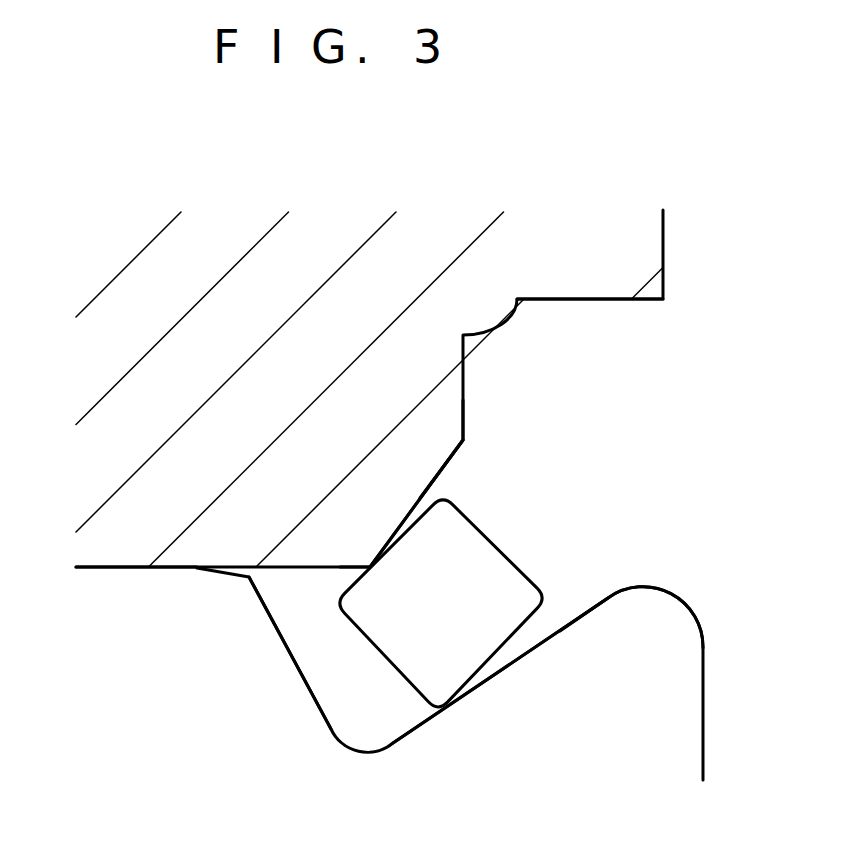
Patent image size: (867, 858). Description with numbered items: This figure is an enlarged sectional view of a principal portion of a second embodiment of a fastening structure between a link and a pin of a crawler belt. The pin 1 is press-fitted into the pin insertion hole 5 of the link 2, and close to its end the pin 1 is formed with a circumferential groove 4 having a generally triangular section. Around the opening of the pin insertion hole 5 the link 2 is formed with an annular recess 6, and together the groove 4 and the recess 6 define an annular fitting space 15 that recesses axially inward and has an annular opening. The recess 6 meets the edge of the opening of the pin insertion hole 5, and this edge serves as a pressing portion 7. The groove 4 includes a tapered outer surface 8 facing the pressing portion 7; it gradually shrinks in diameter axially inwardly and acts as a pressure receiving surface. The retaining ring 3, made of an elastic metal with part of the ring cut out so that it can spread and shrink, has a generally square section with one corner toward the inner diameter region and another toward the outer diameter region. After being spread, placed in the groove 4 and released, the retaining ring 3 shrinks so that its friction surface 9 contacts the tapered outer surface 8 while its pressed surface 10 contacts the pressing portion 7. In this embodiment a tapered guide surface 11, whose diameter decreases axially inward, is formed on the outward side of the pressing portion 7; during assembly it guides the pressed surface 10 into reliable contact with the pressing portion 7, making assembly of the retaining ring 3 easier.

The pin 1 is at (113, 749).
The link 2 is at (108, 260).
The retaining ring 3 is at (477, 556).
The circumferential groove 4 is at (313, 690).
The pin insertion hole 5 is at (123, 568).
The annular recess 6 is at (583, 300).
The pressing portion 7 is at (378, 568).
The tapered outer surface 8 is at (560, 618).
The friction surface 9 is at (501, 647).
The pressed surface 10 is at (420, 503).
The tapered guide surface 11 is at (452, 455).
The annular fitting space 15 is at (642, 456).